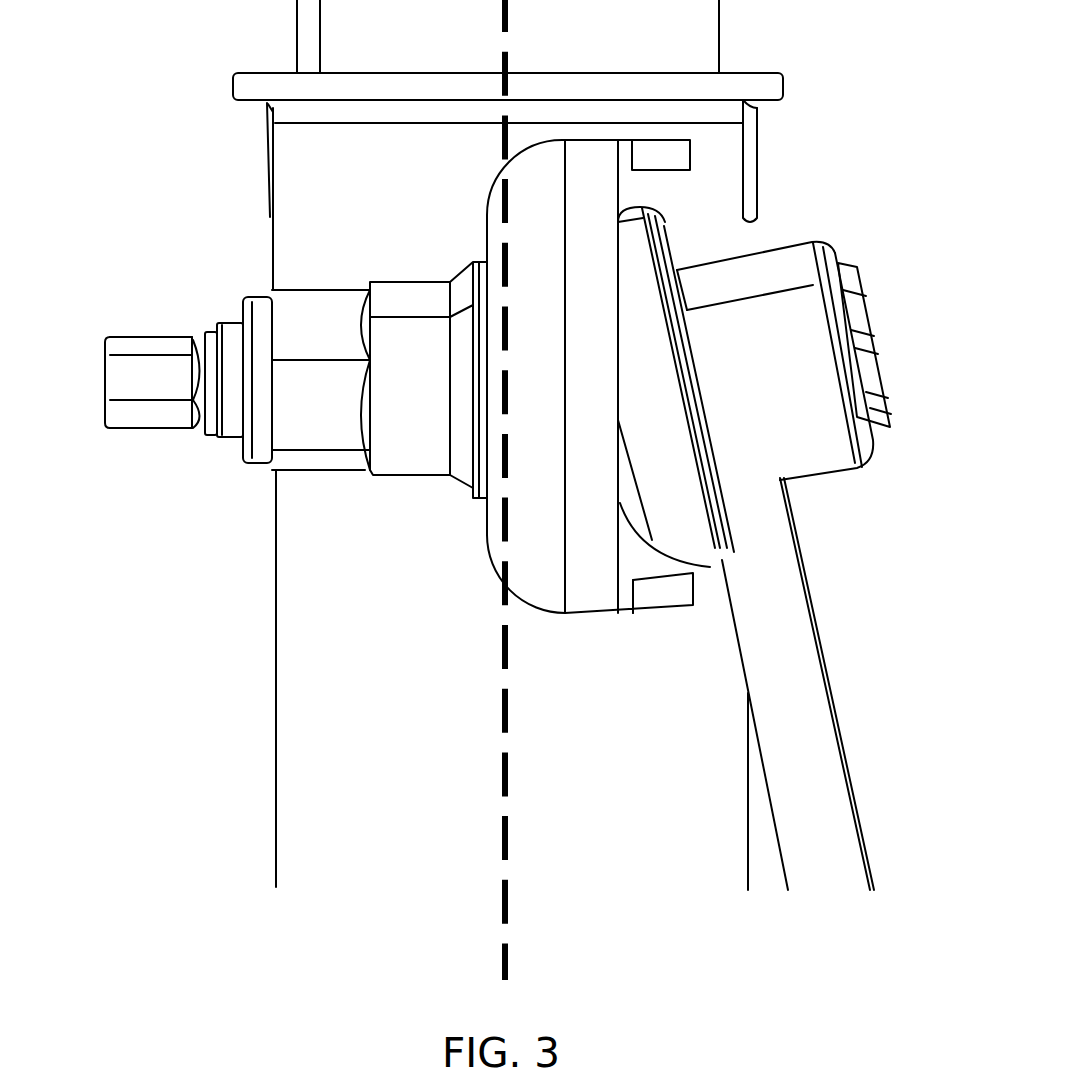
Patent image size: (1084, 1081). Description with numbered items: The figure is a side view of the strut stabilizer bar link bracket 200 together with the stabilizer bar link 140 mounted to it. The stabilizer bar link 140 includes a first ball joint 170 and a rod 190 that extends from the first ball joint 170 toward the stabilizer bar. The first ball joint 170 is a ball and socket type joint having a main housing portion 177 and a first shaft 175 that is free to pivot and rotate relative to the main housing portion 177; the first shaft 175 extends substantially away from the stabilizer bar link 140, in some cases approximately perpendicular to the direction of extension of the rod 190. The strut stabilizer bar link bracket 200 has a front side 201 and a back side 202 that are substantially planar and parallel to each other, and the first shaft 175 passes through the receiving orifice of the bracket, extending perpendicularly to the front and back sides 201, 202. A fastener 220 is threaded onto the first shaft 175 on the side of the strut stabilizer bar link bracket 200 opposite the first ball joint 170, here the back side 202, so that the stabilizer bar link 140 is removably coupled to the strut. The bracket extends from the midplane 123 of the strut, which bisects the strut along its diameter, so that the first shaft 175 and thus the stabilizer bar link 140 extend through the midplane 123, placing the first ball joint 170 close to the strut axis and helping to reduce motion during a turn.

The midplane 123 is at (507, 955).
The stabilizer bar link 140 is at (845, 583).
The first ball joint 170 is at (768, 330).
The first shaft 175 is at (173, 343).
The main housing portion 177 is at (788, 250).
The rod 190 is at (797, 705).
The strut stabilizer bar link bracket 200 is at (590, 196).
The front side 201 is at (623, 551).
The back side 202 is at (488, 515).
The fastener 220 is at (312, 413).